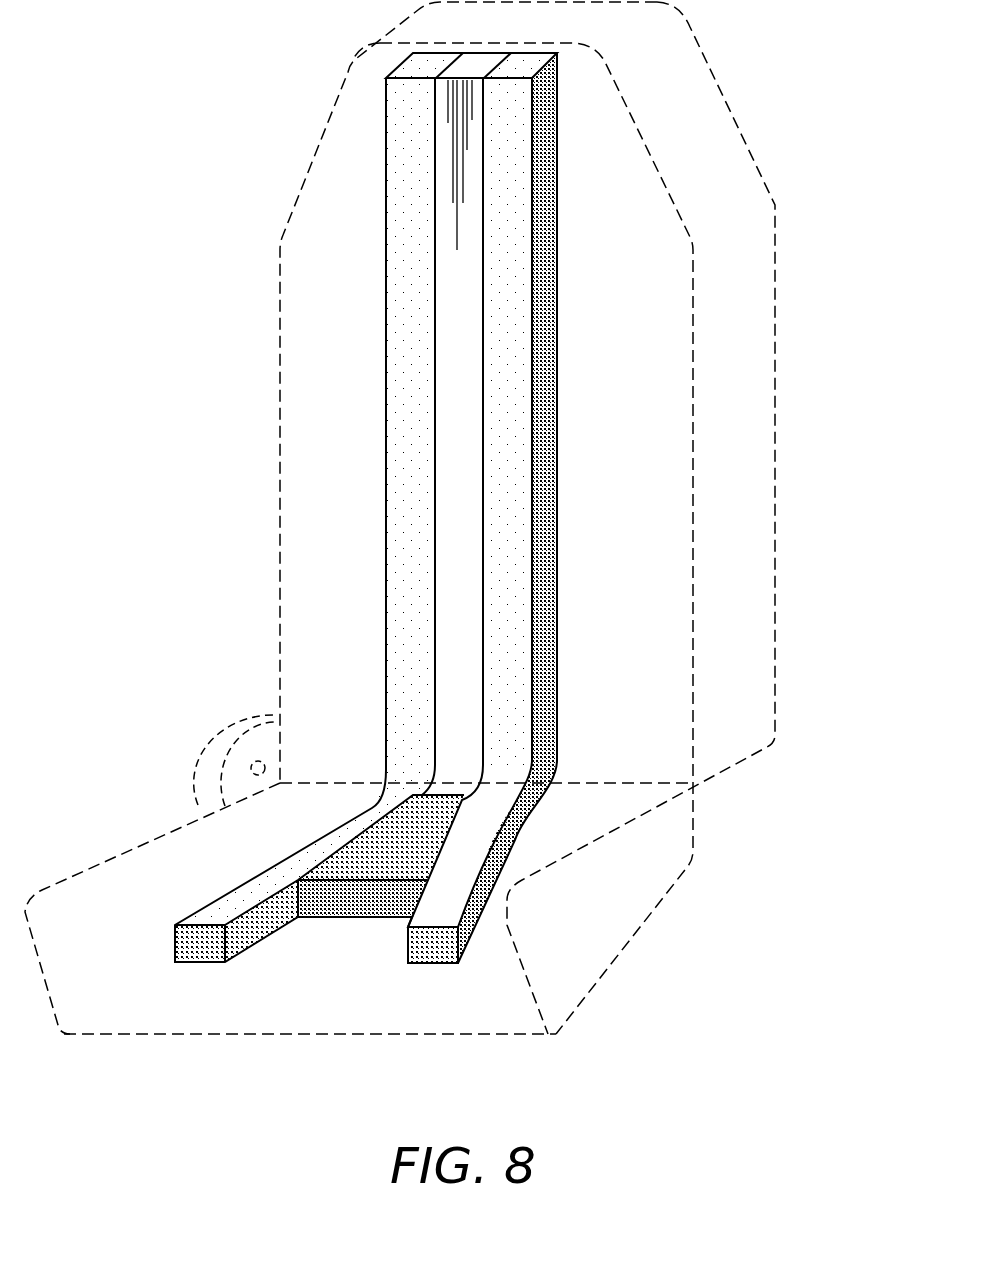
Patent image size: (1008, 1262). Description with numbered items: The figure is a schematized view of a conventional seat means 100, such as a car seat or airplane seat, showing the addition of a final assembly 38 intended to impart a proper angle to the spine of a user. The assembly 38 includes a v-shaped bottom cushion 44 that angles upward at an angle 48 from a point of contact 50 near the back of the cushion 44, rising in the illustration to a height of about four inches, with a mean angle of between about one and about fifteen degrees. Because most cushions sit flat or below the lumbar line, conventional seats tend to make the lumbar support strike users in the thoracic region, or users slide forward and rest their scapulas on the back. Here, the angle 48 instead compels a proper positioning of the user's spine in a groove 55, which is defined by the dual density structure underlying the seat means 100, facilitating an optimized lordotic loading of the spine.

The assembly 38 is at (557, 390).
The groove 55 is at (457, 327).
The bottom cushion 44 is at (218, 837).
The angle 48 is at (258, 762).
The point of contact 50 is at (310, 780).
The seat means 100 is at (275, 1008).